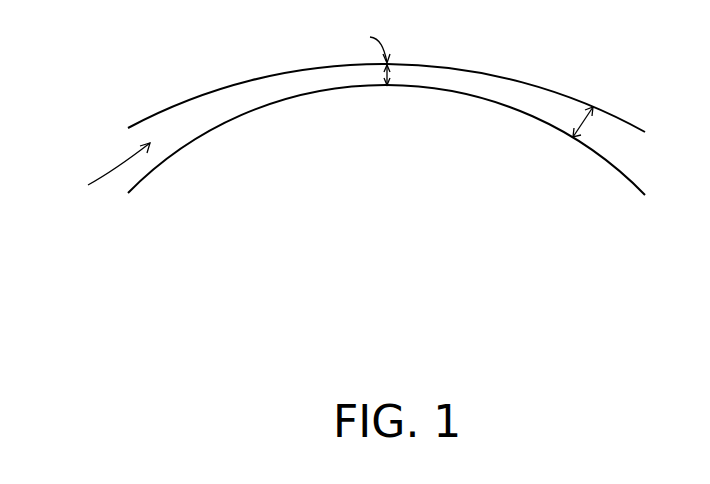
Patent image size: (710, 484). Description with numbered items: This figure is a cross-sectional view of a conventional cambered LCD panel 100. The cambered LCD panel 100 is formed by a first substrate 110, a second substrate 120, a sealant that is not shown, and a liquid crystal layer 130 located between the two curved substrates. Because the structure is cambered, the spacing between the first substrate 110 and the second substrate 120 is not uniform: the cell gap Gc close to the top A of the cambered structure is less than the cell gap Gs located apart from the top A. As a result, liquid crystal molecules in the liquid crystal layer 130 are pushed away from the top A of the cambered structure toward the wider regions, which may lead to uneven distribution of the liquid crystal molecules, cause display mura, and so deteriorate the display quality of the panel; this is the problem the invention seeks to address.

The cambered LCD panel 100 is at (405, 158).
The first substrate 110 is at (162, 163).
The second substrate 120 is at (155, 113).
The liquid crystal layer 130 is at (96, 170).
The top of the cambered structure A is at (371, 41).
The cell gap close to the top Gc is at (388, 86).
The cell gap apart from the top Gs is at (582, 122).